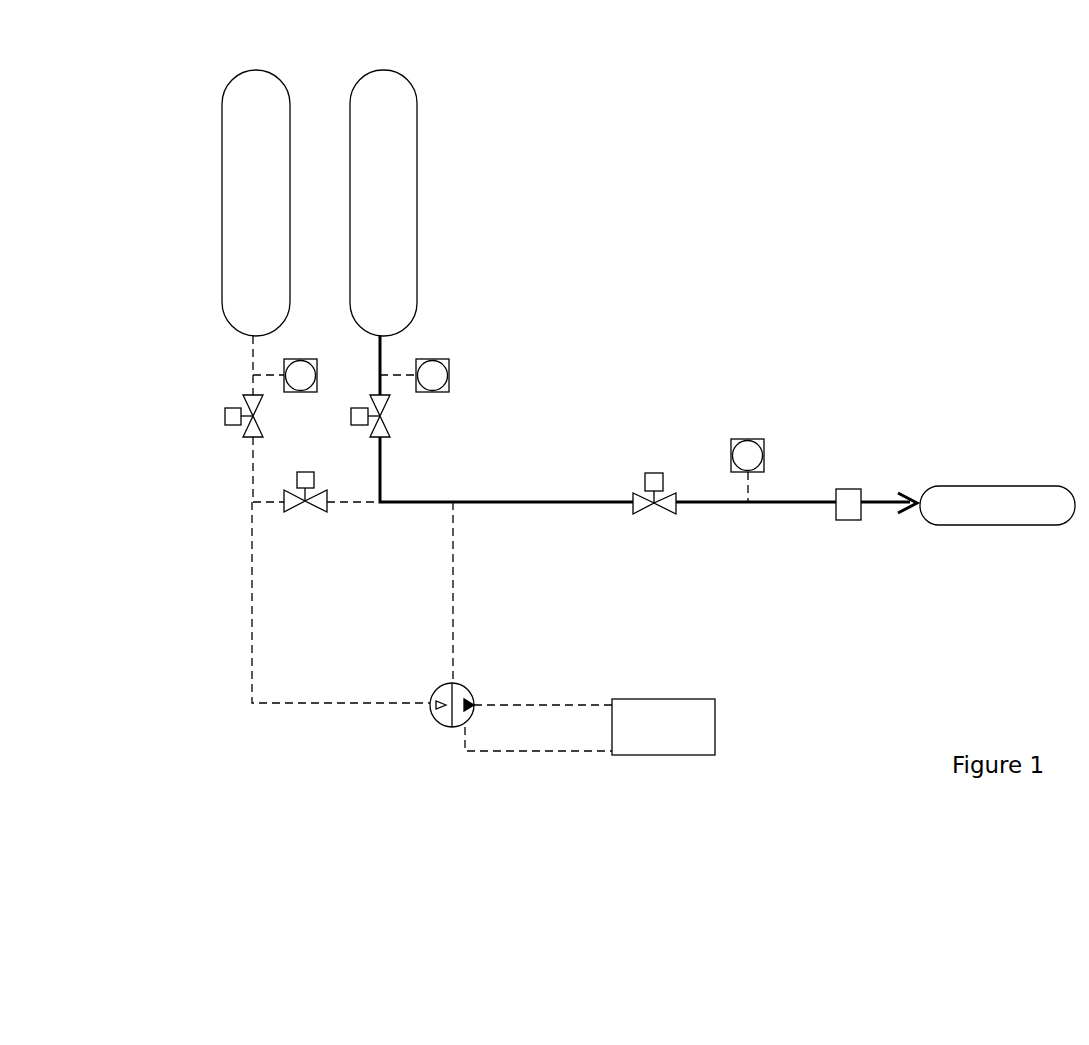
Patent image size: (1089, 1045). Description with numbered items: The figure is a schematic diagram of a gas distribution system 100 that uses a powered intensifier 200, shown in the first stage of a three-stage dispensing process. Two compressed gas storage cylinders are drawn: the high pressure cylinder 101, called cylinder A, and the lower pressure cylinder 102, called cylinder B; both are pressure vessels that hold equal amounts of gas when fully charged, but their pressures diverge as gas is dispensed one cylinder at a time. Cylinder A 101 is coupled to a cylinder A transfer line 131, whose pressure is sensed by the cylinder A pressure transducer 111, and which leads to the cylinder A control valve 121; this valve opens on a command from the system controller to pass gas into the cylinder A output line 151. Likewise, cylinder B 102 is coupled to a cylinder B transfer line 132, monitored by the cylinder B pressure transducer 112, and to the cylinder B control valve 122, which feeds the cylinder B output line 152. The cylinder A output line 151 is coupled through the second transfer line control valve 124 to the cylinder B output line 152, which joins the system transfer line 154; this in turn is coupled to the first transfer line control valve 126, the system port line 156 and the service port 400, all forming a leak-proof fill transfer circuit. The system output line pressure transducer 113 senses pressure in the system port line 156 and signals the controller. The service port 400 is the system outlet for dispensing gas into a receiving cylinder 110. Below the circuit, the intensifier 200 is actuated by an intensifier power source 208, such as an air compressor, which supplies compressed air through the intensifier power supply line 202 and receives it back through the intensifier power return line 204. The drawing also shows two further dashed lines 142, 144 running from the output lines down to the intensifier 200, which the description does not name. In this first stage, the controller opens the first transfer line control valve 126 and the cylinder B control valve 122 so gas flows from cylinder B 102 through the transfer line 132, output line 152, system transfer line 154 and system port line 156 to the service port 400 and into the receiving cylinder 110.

The gas distribution system 100 is at (680, 138).
The high pressure cylinder 101 is at (240, 82).
The lower pressure cylinder 102 is at (373, 82).
The receiving cylinder 110 is at (1000, 483).
The cylinder A pressure transducer 111 is at (305, 360).
The cylinder B pressure transducer 112 is at (450, 372).
The system output line pressure transducer 113 is at (752, 440).
The cylinder A control valve 121 is at (235, 408).
The cylinder B control valve 122 is at (385, 408).
The second transfer line control valve 124 is at (310, 512).
The first transfer line control valve 126 is at (640, 490).
The cylinder A transfer line 131 is at (253, 357).
The cylinder B transfer line 132 is at (385, 360).
The control line to pump 142 is at (452, 598).
The control line from reservoir A branch to pump 144 is at (250, 598).
The cylinder A output line 151 is at (262, 500).
The cylinder B output line 152 is at (413, 500).
The system transfer line 154 is at (520, 500).
The system port line 156 is at (805, 500).
The powered intensifier 200 is at (440, 730).
The intensifier power supply line 202 is at (565, 700).
The intensifier power return line 204 is at (540, 754).
The intensifier power source 208 is at (668, 698).
The service port 400 is at (845, 522).